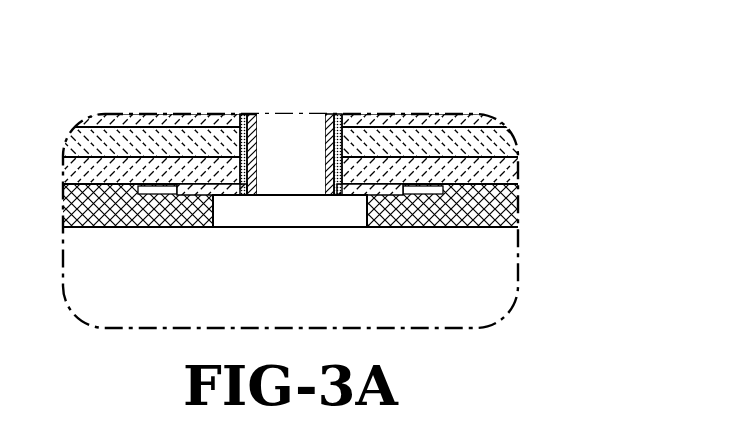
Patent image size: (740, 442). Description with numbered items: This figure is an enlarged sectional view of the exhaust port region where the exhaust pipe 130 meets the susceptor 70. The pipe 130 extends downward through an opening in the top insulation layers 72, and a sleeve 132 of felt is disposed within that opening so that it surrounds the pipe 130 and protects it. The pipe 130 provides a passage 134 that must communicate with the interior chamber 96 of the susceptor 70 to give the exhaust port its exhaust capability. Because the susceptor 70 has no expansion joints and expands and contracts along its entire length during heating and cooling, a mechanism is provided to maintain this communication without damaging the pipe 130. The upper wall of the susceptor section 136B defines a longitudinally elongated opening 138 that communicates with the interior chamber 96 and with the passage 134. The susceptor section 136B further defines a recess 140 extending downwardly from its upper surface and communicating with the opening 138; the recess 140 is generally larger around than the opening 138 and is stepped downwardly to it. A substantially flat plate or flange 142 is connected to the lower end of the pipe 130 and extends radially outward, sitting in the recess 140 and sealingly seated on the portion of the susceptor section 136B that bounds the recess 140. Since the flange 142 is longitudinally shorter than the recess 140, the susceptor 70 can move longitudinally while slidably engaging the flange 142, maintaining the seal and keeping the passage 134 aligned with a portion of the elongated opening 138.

The susceptor 70 is at (514, 197).
The top insulation layers 72 is at (467, 111).
The interior chamber 96 is at (474, 241).
The pipe 130 is at (253, 134).
The sleeve 132 is at (343, 139).
The passage 134 is at (292, 143).
The susceptor section 136B is at (166, 234).
The longitudinally elongated opening 138 is at (265, 223).
The recess 140 is at (160, 189).
The flange 142 is at (362, 197).